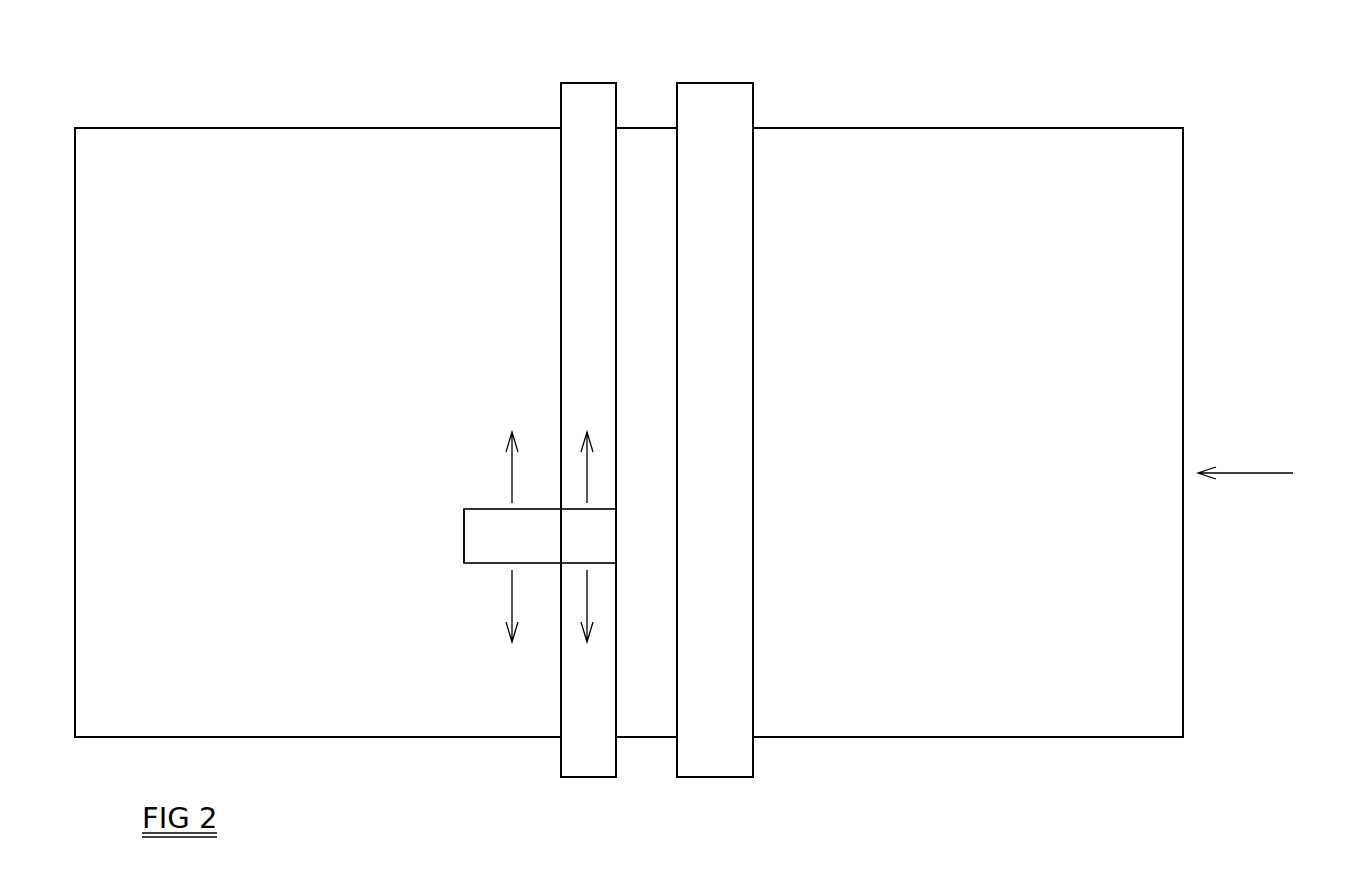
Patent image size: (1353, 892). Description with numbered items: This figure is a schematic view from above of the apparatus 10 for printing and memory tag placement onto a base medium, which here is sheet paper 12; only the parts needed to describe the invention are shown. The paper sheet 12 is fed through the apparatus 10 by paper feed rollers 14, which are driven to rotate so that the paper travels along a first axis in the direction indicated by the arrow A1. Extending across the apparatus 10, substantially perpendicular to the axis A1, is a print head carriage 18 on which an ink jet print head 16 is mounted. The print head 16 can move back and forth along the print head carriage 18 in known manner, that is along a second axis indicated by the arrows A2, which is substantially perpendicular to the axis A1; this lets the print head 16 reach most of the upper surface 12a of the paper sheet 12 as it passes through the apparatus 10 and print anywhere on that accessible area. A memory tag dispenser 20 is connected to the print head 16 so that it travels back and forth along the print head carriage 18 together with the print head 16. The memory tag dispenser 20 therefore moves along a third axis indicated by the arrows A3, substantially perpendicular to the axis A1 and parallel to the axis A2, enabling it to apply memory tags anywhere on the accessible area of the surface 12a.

The apparatus 10 is at (937, 108).
The sheet paper 12 is at (1183, 238).
The upper surface 12a is at (1143, 642).
The paper feed rollers 14 is at (715, 777).
The print head 16 is at (616, 527).
The print head carriage 18 is at (580, 777).
The memory tag dispenser 20 is at (472, 537).
The first axis direction arrows A1 is at (1266, 475).
The second axis arrows A2 is at (585, 467).
The third axis arrows A3 is at (511, 470).